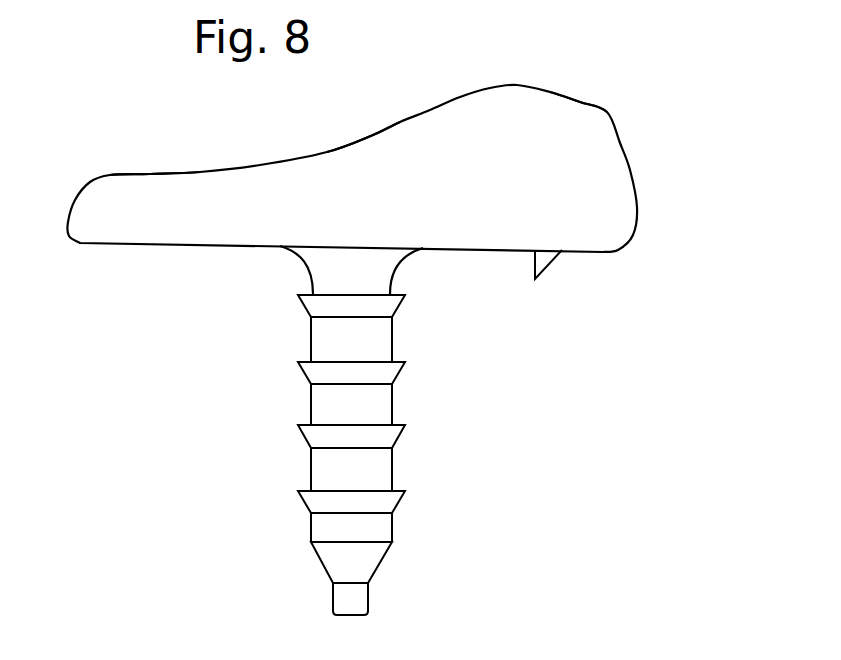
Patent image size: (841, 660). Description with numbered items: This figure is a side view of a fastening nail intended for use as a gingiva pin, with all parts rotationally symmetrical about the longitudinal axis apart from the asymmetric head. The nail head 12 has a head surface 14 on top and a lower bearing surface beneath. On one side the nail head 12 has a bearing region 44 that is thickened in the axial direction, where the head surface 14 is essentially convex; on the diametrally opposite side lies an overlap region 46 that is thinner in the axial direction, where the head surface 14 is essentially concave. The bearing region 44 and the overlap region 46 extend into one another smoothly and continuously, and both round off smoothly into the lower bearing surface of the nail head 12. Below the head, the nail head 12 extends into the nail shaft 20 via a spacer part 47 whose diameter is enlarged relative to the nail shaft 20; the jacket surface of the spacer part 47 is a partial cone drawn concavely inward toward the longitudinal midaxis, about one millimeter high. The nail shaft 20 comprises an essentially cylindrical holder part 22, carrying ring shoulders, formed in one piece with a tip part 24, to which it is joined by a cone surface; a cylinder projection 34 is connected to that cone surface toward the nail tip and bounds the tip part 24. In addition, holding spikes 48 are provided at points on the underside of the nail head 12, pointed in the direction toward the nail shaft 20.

The nail head 12 is at (643, 220).
The head surface 14 is at (373, 135).
The nail shaft 20 is at (445, 464).
The holder part 22 is at (375, 462).
The tip part 24 is at (403, 563).
The cylinder projection 34 is at (355, 603).
The bearing region 44 is at (607, 110).
The overlap region 46 is at (185, 160).
The spacer part 47 is at (312, 263).
The holding spikes 48 is at (540, 264).